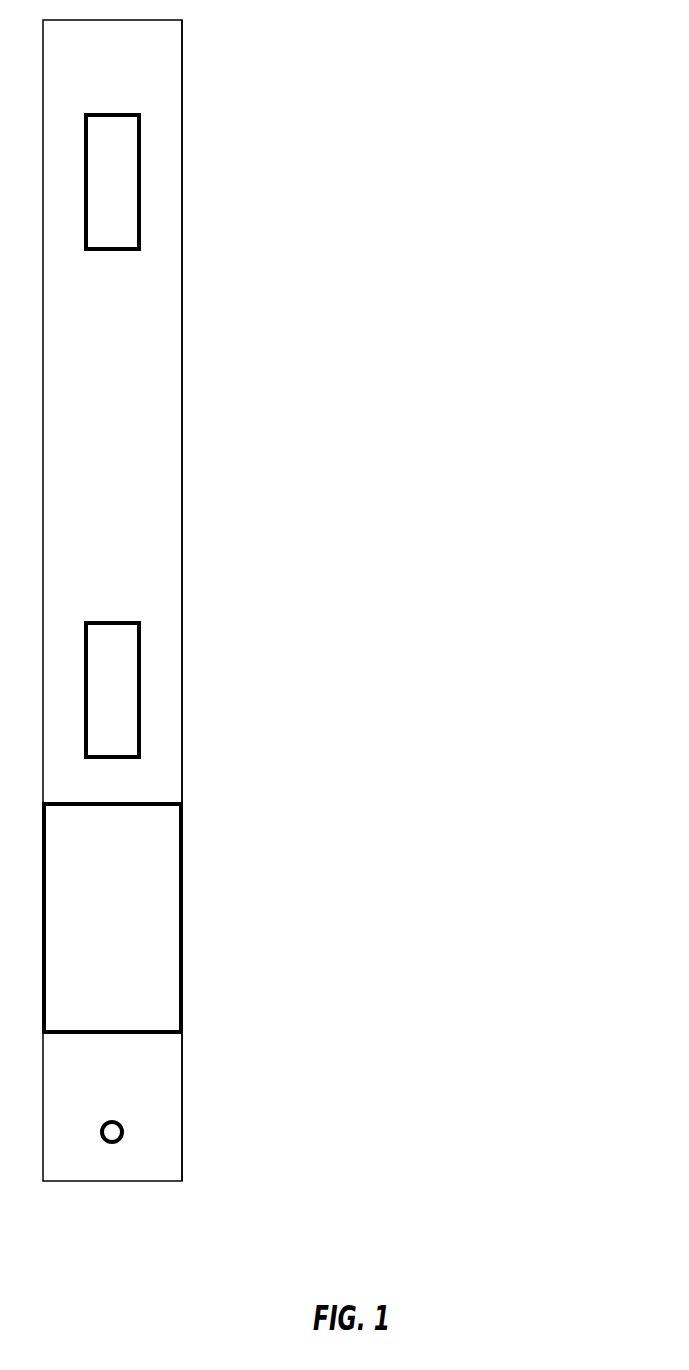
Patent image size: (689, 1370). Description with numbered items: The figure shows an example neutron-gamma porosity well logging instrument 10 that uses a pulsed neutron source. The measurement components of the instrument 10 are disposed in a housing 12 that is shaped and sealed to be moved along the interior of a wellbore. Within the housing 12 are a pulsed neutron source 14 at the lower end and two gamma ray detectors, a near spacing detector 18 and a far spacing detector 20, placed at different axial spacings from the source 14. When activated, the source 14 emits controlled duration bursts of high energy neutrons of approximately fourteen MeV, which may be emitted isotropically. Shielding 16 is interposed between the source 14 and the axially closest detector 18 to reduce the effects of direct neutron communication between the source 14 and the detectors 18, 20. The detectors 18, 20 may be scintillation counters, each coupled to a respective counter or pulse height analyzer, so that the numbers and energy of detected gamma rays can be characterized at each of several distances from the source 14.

The well logging instrument 10 is at (222, 380).
The housing 12 is at (182, 63).
The pulsed neutron source 14 is at (124, 1132).
The shielding 16 is at (120, 909).
The near spacing detector 18 is at (120, 689).
The far spacing detector 20 is at (120, 184).